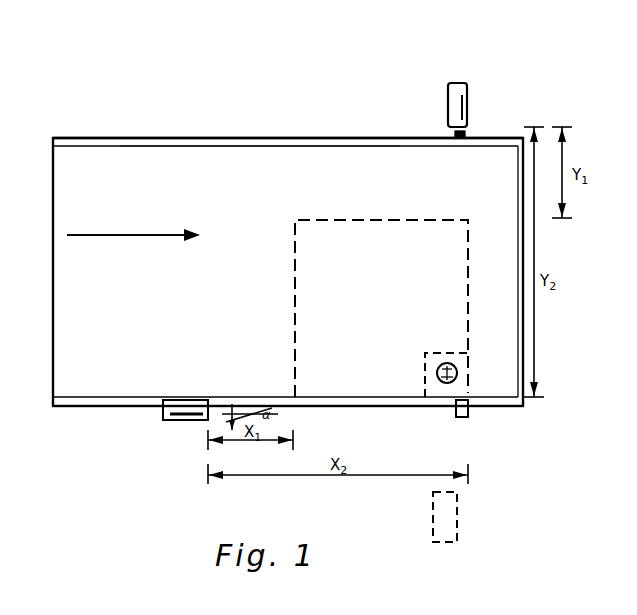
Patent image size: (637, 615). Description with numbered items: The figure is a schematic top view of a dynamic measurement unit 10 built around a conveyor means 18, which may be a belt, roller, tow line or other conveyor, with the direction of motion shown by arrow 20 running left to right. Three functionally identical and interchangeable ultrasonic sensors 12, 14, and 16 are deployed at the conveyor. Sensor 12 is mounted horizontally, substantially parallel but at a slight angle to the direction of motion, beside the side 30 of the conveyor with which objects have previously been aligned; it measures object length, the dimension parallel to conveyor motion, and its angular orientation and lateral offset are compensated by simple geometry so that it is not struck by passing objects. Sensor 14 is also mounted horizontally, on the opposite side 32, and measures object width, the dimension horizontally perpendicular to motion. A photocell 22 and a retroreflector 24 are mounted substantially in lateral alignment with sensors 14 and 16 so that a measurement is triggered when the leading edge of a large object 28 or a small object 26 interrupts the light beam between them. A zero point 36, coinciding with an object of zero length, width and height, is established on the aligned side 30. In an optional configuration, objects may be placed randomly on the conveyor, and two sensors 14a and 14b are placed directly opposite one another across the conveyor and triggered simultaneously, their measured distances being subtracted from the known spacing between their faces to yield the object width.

The dynamic measurement unit 10 is at (368, 100).
The ultrasonic sensor 12 is at (168, 421).
The ultrasonic sensor 14 is at (464, 101).
The sensor 14a is at (561, 72).
The sensor 14b is at (458, 511).
The ultrasonic sensor 16 is at (440, 384).
The conveyor means 18 is at (193, 178).
The arrow 20 is at (122, 236).
The photocell 22 is at (470, 412).
The retroreflector 24 is at (468, 133).
The small object 26 is at (470, 365).
The large object 28 is at (442, 275).
The side of conveyor means 30 is at (100, 392).
The side of conveyor means 32 is at (310, 156).
The zero point 36 is at (474, 392).